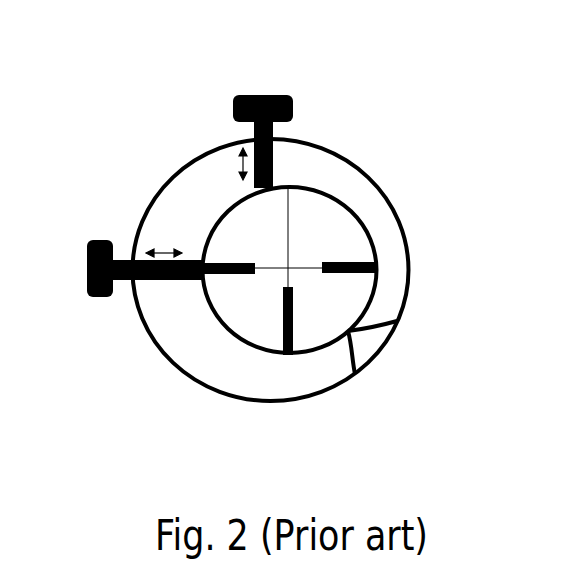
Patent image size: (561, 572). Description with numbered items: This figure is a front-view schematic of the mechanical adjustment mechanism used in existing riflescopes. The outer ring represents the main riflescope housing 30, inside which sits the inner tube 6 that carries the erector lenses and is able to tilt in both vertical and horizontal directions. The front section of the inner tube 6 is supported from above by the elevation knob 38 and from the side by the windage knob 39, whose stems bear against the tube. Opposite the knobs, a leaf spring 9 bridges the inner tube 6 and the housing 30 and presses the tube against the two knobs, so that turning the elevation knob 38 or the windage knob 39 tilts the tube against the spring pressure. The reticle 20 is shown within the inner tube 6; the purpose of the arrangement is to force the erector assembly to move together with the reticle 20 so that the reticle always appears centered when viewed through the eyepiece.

The main riflescope housing 30 is at (358, 162).
The inner tube 6 is at (368, 233).
The elevation knob 38 is at (274, 95).
The windage knob 39 is at (100, 240).
The reticle 20 is at (284, 312).
The leaf spring 9 is at (353, 355).